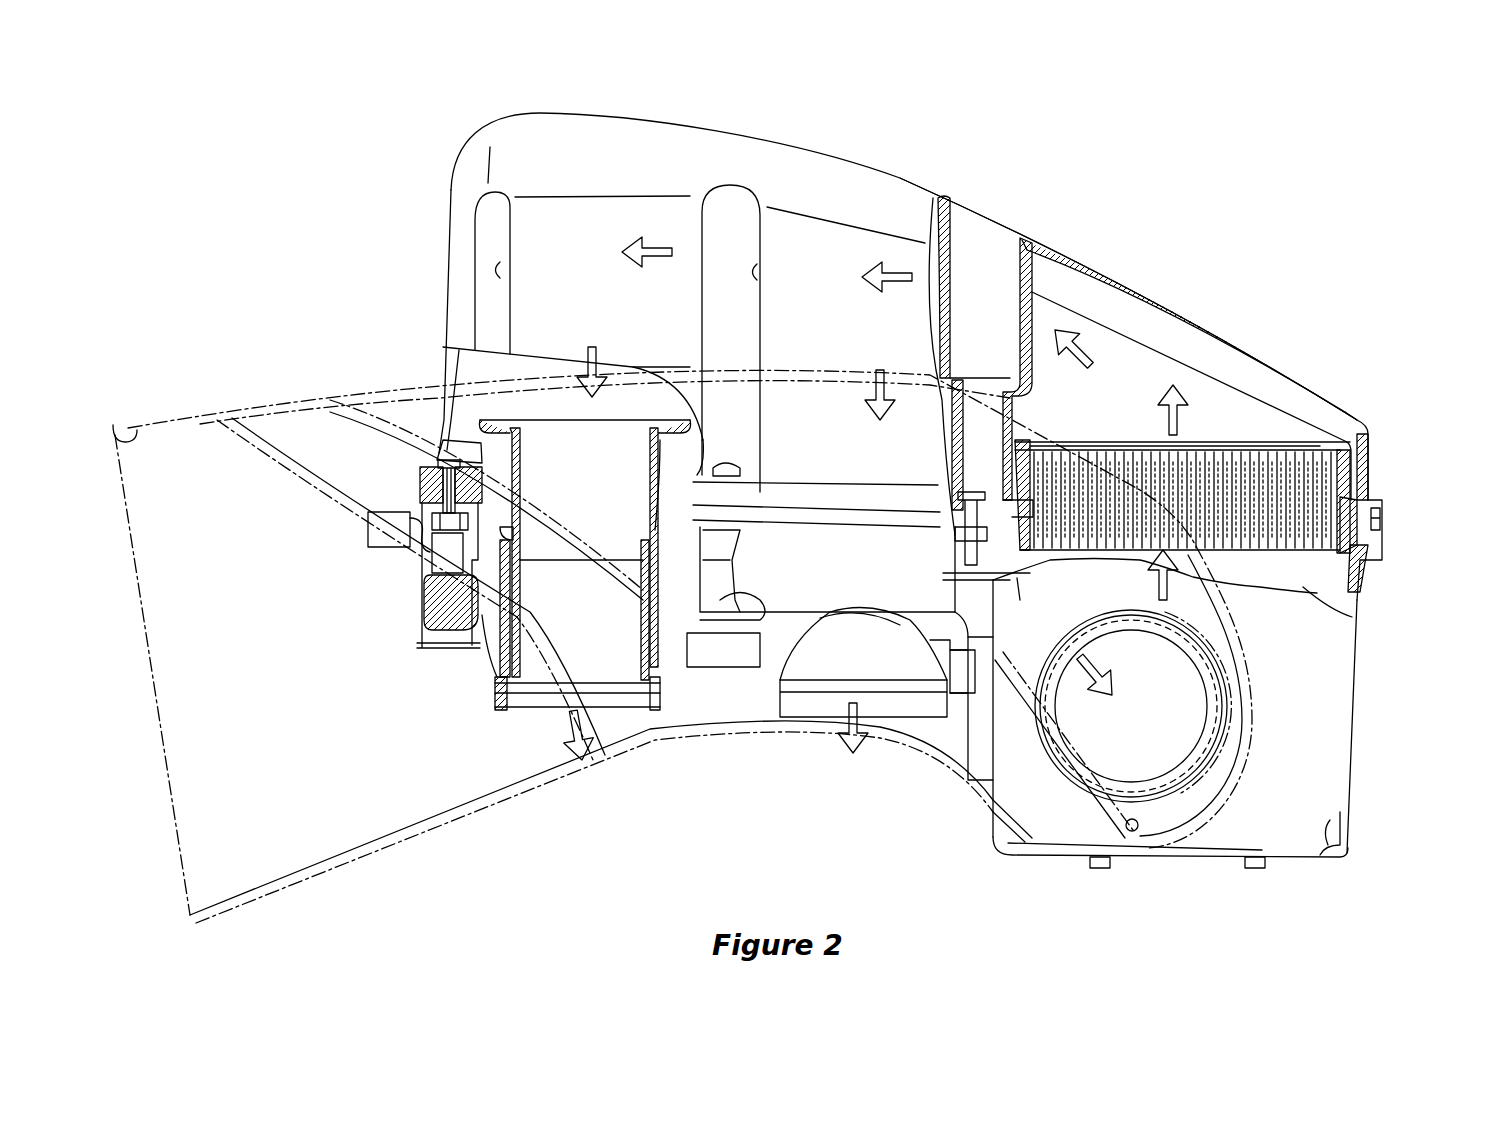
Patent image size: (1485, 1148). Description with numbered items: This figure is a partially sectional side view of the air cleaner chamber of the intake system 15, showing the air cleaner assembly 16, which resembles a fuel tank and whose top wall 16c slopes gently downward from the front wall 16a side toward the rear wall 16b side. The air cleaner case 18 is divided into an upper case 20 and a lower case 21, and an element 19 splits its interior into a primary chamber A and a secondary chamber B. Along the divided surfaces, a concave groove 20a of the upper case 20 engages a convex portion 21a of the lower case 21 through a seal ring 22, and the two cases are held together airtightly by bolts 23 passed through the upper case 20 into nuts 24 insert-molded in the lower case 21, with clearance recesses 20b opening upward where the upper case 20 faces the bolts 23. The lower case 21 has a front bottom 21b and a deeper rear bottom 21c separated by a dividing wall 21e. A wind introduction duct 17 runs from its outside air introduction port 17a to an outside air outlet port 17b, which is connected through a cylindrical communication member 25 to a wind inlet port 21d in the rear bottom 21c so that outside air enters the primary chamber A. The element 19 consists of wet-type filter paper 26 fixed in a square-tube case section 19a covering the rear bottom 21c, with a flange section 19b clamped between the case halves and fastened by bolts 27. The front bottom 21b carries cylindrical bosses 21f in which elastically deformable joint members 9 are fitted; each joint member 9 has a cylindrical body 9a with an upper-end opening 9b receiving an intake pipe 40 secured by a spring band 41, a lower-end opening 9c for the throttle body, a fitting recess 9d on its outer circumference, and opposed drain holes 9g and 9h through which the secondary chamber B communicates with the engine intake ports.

The joint member 9 is at (493, 722).
The cylindrical body 9a is at (642, 600).
The upper-end opening 9b is at (703, 560).
The lower-end opening 9c is at (665, 692).
The fitting recess 9d is at (514, 596).
The drain hole 9g is at (514, 636).
The drain hole 9h is at (642, 642).
The air intake system 15 is at (1228, 142).
The air cleaner assembly 16 is at (1212, 292).
The front wall 16a is at (444, 272).
The rear wall 16b is at (1360, 467).
The top wall 16c is at (900, 160).
The wind introduction duct 17 is at (318, 390).
The outside air introduction port 17a is at (115, 425).
The outside air outlet port 17b is at (1240, 722).
The air cleaner case 18 is at (842, 150).
The element 19 is at (1300, 440).
The case section 19a is at (1366, 450).
The flange section 19b is at (980, 425).
The upper case 20 is at (1378, 412).
The concave groove 20a is at (428, 512).
The clearance recess 20b is at (500, 278).
The lower case 21 is at (1357, 675).
The convex portion 21a is at (428, 478).
The front bottom 21b is at (442, 655).
The rear bottom 21c is at (1348, 800).
The wind inlet port 21d is at (1205, 622).
The dividing wall 21e is at (1017, 572).
The cylindrical boss 21f is at (492, 650).
The seal ring 22 is at (1382, 515).
The bolt 23 is at (440, 448).
The nut 24 is at (408, 560).
The cylindrical communication member 25 is at (1237, 660).
The wet-type filter paper 26 is at (1235, 440).
The bolt 27 is at (958, 500).
The intake pipe 40 is at (632, 430).
The spring band 41 is at (655, 533).
The primary chamber A is at (1330, 600).
The secondary chamber B is at (1105, 332).